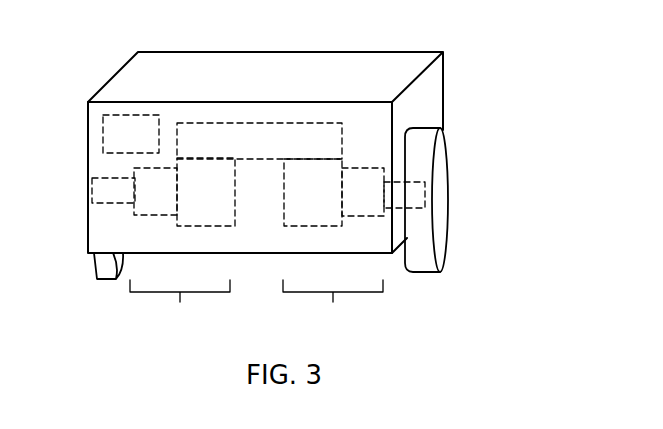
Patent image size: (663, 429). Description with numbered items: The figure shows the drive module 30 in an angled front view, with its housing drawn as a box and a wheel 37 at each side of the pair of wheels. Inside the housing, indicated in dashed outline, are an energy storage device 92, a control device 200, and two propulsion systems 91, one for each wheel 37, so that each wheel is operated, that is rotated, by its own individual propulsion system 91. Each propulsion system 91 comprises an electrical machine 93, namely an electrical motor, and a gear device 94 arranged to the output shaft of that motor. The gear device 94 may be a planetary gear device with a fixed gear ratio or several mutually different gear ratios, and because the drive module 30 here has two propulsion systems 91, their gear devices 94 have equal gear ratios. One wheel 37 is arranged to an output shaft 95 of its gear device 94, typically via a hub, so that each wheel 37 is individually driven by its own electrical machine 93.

The drive module 30 is at (279, 62).
The wheel 37 is at (442, 195).
The propulsion system 91 is at (256, 309).
The energy storage device 92 is at (240, 151).
The electrical machine 93 is at (193, 201).
The gear device 94 is at (142, 201).
The output shaft 95 is at (103, 190).
The control device 200 is at (112, 144).